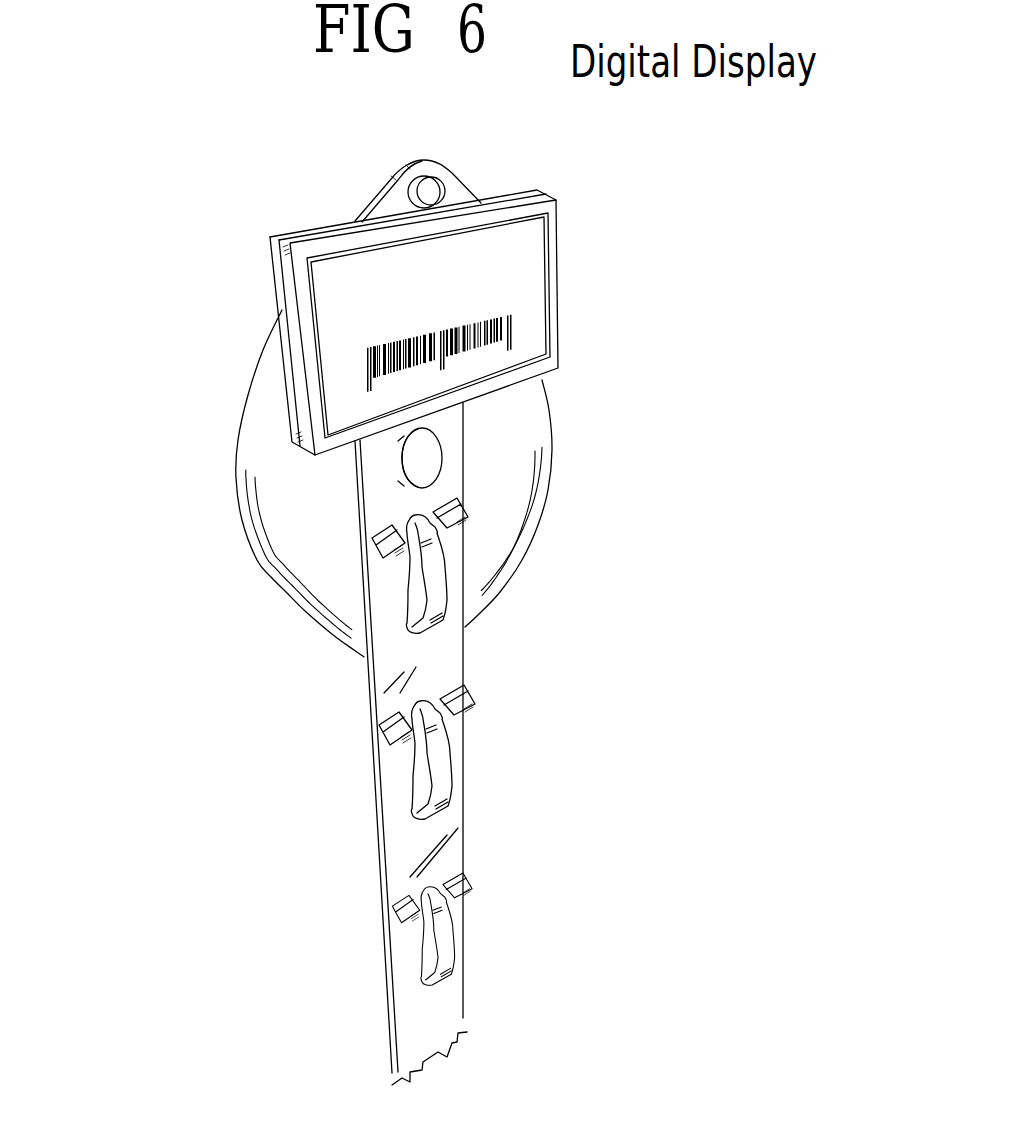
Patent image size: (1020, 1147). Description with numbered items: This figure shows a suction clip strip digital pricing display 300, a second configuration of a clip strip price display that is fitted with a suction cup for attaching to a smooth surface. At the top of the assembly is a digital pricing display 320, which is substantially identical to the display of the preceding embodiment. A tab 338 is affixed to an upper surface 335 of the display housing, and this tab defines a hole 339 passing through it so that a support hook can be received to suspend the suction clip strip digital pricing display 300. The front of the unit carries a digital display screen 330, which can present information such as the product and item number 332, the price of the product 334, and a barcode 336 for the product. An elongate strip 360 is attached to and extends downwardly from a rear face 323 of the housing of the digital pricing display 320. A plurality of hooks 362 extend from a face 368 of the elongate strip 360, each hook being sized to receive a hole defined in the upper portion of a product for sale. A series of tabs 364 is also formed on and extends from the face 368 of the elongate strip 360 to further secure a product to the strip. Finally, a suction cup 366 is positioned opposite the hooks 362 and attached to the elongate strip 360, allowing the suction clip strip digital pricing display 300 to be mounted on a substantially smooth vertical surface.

The suction clip strip digital pricing display 300 is at (134, 190).
The digital pricing display 320 is at (272, 271).
The rear face 323 is at (281, 370).
The digital display screen 330 is at (548, 224).
The product and item number 332 is at (353, 283).
The price of the product 334 is at (542, 277).
The upper surface 335 is at (509, 207).
The barcode 336 is at (515, 330).
The tab 338 is at (446, 170).
The hole 339 is at (421, 194).
The elongate strip 360 is at (376, 697).
The hooks 362 is at (450, 763).
The tabs 364 is at (470, 700).
The suction cup 366 is at (237, 500).
The face 368 is at (392, 793).